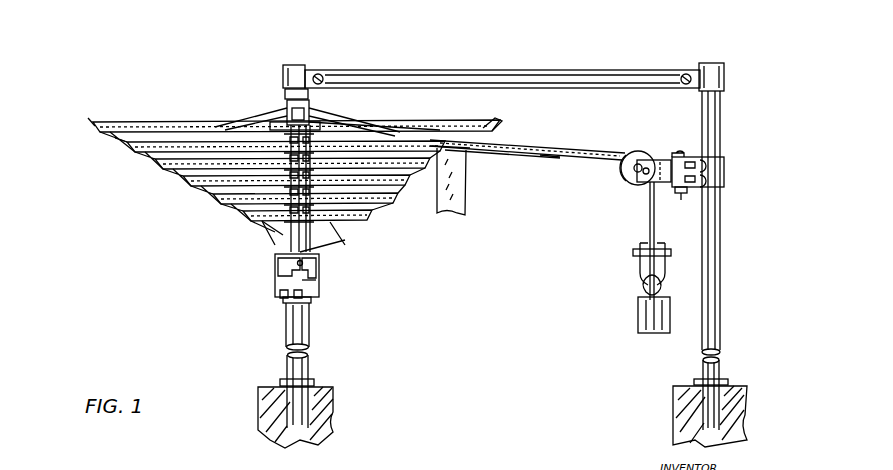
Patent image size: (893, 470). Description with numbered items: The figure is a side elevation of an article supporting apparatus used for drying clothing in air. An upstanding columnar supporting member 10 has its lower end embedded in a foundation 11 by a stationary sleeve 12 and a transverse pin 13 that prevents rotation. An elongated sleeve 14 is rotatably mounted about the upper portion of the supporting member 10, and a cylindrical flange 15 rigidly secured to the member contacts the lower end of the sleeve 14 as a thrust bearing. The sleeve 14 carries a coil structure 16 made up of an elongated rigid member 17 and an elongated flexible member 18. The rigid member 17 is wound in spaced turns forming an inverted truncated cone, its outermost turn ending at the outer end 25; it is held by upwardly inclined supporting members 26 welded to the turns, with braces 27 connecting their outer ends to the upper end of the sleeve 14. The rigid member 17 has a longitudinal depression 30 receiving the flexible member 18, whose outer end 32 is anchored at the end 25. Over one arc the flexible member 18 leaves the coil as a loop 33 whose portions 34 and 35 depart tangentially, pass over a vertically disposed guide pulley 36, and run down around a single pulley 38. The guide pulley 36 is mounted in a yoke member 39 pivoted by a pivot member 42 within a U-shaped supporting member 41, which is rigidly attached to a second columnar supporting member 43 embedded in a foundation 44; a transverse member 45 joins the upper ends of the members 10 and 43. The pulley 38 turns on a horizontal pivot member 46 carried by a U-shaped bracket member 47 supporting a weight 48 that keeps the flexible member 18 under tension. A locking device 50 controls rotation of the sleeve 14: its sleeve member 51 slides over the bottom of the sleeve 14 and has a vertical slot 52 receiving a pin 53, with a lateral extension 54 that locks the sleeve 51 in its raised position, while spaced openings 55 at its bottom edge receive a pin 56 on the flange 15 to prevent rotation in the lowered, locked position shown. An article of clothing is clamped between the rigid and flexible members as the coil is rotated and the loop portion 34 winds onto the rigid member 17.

The columnar supporting member 10 is at (285, 322).
The foundation 11 is at (262, 410).
The stationary sleeve 12 is at (312, 406).
The transverse pin 13 is at (314, 382).
The elongated sleeve 14 is at (288, 100).
The cylindrical flange 15 is at (320, 302).
The coil structure 16 is at (160, 183).
The elongated rigid member 17 is at (140, 128).
The elongated flexible member 18 is at (432, 175).
The outermost end of elongated rigid member 25 is at (318, 130).
The supporting members 26 is at (122, 138).
The braces 27 is at (250, 118).
The longitudinal depression 30 is at (498, 124).
The other end of flexible member 32 is at (360, 125).
The loop 33 is at (552, 160).
The loop portion 34 is at (500, 150).
The loop portion 35 is at (530, 142).
The guide pulley 36 is at (625, 180).
The pulley 38 is at (650, 234).
The yoke member 39 is at (653, 161).
The U-shaped supporting member 41 is at (705, 172).
The pivot member 42 is at (681, 200).
The columnar supporting member 43 is at (718, 241).
The foundation 44 is at (669, 388).
The transverse member 45 is at (535, 70).
The horizontal pivot member 46 is at (638, 253).
The bracket member 47 is at (640, 265).
The weight 48 is at (638, 316).
The locking device 50 is at (268, 275).
The sleeve member 51 is at (278, 284).
The vertical slot 52 is at (295, 250).
The pin 53 is at (318, 270).
The lateral extension 54 is at (312, 278).
The spaced openings 55 is at (282, 296).
The pin 56 is at (306, 298).